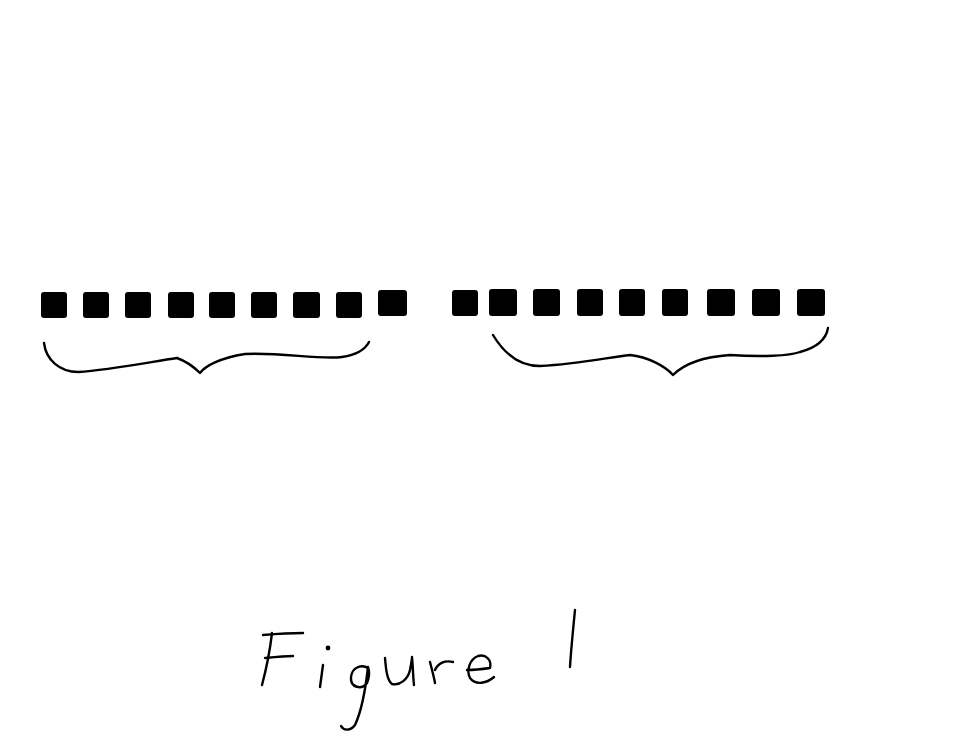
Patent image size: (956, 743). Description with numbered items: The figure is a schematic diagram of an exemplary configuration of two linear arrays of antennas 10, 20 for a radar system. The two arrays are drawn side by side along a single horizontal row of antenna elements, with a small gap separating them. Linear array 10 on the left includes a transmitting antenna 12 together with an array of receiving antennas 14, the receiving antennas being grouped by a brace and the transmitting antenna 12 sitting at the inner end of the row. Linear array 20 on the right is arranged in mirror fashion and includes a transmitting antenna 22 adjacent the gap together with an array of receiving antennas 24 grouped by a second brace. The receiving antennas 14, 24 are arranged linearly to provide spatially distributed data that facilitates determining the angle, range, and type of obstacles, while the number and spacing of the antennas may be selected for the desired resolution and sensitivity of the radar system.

The linear array 10 is at (194, 182).
The transmitting antenna 12 is at (392, 290).
The array of receiving antennas 14 is at (206, 384).
The linear array 20 is at (665, 178).
The transmitting antenna 22 is at (465, 290).
The array of receiving antennas 24 is at (660, 378).